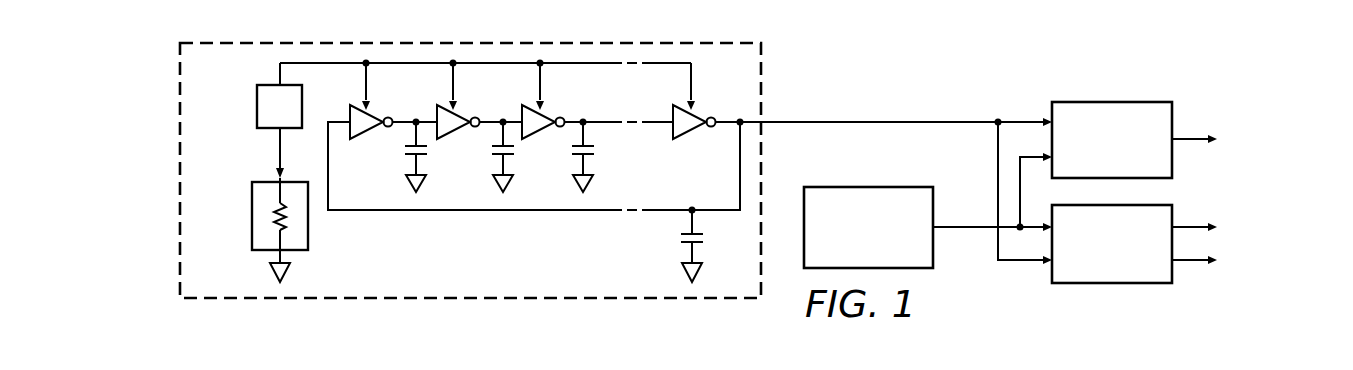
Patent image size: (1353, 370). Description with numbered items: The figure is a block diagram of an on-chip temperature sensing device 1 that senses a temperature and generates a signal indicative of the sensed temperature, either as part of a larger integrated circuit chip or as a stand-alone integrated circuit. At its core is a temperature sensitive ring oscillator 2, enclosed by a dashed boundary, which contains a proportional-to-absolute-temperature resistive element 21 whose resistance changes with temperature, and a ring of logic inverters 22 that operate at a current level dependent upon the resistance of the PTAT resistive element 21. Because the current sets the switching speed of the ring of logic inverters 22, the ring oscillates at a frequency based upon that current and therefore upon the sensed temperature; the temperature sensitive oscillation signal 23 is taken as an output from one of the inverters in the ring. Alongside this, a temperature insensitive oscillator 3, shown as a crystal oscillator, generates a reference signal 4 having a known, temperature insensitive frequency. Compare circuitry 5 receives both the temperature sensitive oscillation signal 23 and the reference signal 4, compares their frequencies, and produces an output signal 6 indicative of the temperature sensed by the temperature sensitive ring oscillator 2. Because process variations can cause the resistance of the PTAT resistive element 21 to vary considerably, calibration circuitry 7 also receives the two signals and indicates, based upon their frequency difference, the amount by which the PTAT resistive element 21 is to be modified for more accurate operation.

The temperature sensing device 1 is at (132, 113).
The temperature sensitive ring oscillator 2 is at (180, 170).
The PTAT resistive element 21 is at (252, 213).
The ring of logic inverters 22 is at (386, 148).
The temperature sensitive oscillation signal 23 is at (885, 121).
The temperature insensitive oscillator 3 is at (868, 187).
The reference signal 4 is at (971, 229).
The compare circuitry 5 is at (1112, 102).
The output signal 6 is at (1187, 137).
The calibration circuitry 7 is at (1110, 285).